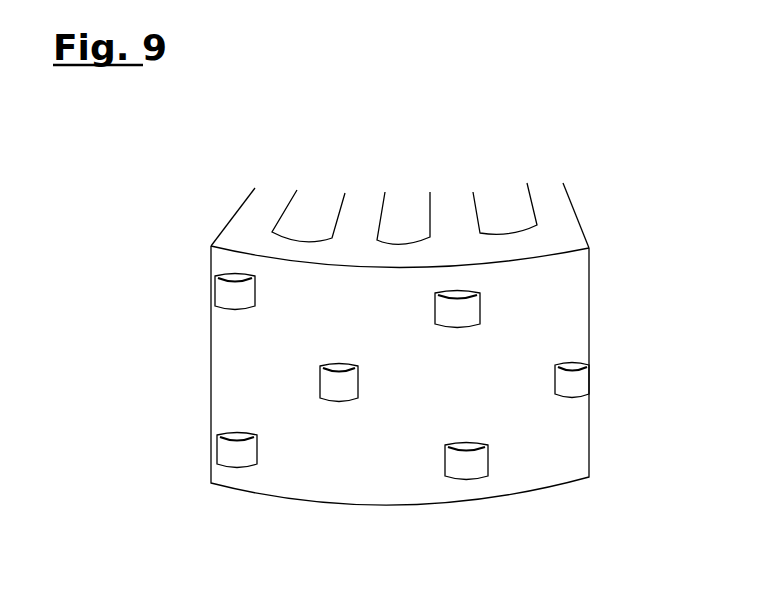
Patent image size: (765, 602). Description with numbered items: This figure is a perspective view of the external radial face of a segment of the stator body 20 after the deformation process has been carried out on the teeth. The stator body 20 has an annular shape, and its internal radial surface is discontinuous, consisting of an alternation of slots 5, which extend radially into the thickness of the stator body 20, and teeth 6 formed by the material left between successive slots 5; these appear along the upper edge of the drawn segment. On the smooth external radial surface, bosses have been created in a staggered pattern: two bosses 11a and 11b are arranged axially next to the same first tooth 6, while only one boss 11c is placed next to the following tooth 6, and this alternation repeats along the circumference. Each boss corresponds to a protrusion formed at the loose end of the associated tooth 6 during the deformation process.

The stator body 20 is at (193, 402).
The tooth 6 is at (258, 202).
The slot 5 is at (507, 207).
The boss 11a is at (233, 288).
The boss 11b is at (225, 458).
The boss 11c is at (327, 392).